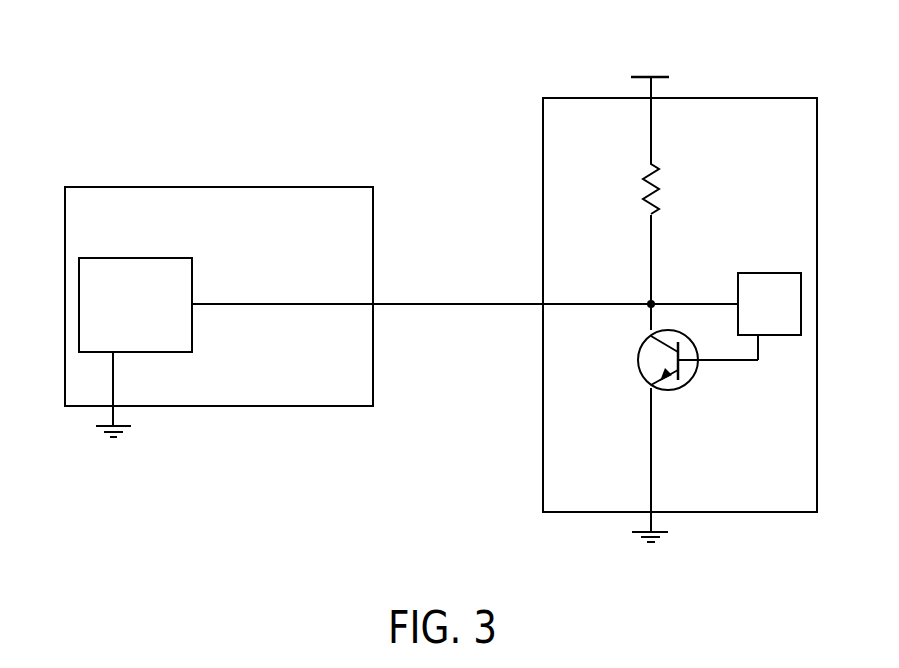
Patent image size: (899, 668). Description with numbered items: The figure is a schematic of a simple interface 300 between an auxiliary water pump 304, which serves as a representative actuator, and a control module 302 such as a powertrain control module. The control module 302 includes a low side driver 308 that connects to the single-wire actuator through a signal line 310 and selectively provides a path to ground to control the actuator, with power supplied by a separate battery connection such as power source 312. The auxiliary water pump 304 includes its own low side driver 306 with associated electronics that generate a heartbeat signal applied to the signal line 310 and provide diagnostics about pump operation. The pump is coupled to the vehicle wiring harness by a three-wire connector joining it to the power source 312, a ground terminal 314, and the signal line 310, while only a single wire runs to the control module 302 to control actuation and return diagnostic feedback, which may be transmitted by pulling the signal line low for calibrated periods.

The interface 300 is at (410, 76).
The control module 302 is at (218, 187).
The auxiliary water pump 304 is at (817, 137).
The low side driver 306 is at (801, 305).
The low side driver 308 is at (79, 302).
The signal line 310 is at (467, 305).
The power source 312 is at (650, 92).
The ground terminal 314 is at (652, 515).